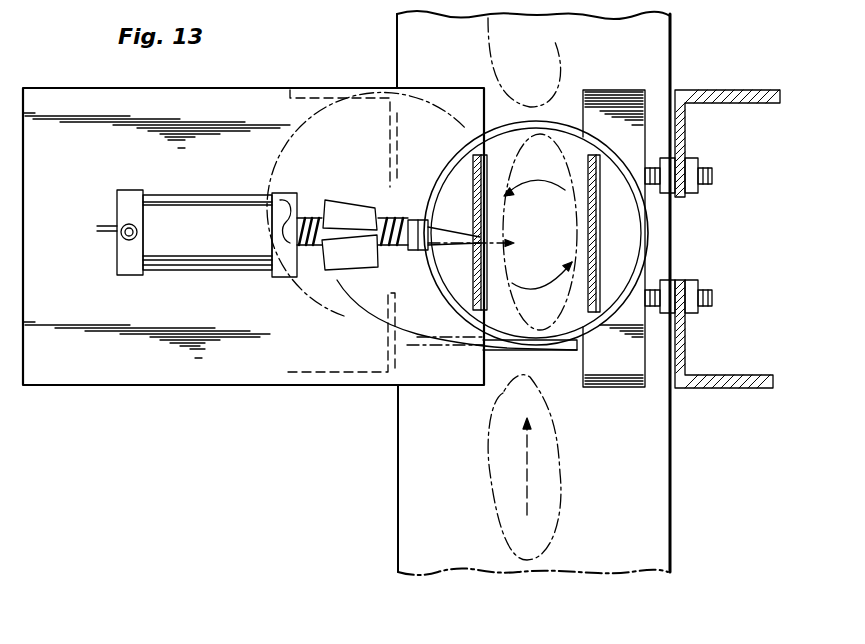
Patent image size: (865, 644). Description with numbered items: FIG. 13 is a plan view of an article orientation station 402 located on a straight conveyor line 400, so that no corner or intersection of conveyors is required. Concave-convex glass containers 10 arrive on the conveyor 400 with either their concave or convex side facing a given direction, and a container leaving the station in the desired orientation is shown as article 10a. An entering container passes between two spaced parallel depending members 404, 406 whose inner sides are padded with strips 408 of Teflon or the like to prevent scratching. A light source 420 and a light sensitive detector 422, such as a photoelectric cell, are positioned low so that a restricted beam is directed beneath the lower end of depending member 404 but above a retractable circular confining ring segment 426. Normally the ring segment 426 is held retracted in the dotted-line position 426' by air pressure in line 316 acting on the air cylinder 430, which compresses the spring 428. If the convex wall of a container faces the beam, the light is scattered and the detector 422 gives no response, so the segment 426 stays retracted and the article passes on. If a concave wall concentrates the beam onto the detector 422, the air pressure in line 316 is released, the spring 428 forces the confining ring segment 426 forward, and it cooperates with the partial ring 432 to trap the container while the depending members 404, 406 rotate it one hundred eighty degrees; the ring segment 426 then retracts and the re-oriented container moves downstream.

The concave-convex article 10 is at (560, 493).
The article in desired orientation 10a is at (545, 50).
The air pressure line 316 is at (298, 205).
The conveyor line 400 is at (667, 492).
The article orientation station 402 is at (478, 354).
The depending member 404 is at (483, 190).
The depending member 406 is at (592, 199).
The padding strip 408 is at (478, 266).
The light source 420 is at (330, 272).
The light sensitive detector 422 is at (325, 200).
The confining ring segment 426 is at (457, 315).
The retracted position of ring segment 426' is at (367, 226).
The spring 428 is at (307, 268).
The air cylinder 430 is at (218, 183).
The partial ring 432 is at (644, 243).